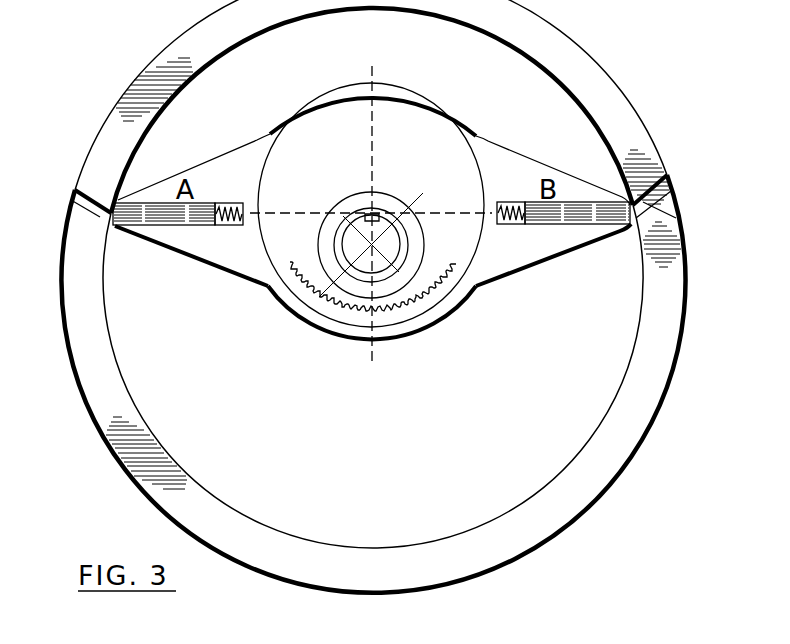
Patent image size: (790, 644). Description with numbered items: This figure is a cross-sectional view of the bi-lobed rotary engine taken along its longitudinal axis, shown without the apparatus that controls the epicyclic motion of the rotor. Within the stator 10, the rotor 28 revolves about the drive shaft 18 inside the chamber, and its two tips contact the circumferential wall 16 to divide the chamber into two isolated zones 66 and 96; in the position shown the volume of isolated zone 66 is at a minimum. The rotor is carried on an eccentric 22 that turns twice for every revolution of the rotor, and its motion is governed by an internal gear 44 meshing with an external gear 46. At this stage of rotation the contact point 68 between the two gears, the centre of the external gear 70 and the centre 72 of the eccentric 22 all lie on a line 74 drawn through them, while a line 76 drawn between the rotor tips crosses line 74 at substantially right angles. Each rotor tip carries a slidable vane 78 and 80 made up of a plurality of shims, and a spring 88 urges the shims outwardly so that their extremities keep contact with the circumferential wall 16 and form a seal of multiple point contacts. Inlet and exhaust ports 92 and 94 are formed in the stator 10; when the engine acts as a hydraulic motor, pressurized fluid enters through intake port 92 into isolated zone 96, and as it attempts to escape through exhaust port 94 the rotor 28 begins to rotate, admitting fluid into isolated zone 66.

The stator 10 is at (616, 98).
The circumferential wall 16 is at (637, 330).
The drive shaft 18 is at (352, 233).
The eccentric 22 is at (303, 142).
The rotor 28 is at (485, 267).
The internal gear 44 is at (296, 298).
The external gear 46 is at (300, 266).
The isolated zone 66 is at (336, 63).
The contact point 68 is at (374, 310).
The centre of the external gear 70 is at (373, 245).
The centre of the eccentric 72 is at (374, 214).
The line 74 is at (374, 148).
The line 76 is at (451, 212).
The slidable vane 78 is at (580, 216).
The slidable vane 80 is at (157, 215).
The spring 88 is at (230, 203).
The inlet port 92 is at (680, 217).
The exhaust port 94 is at (88, 208).
The isolated zone 96 is at (400, 474).